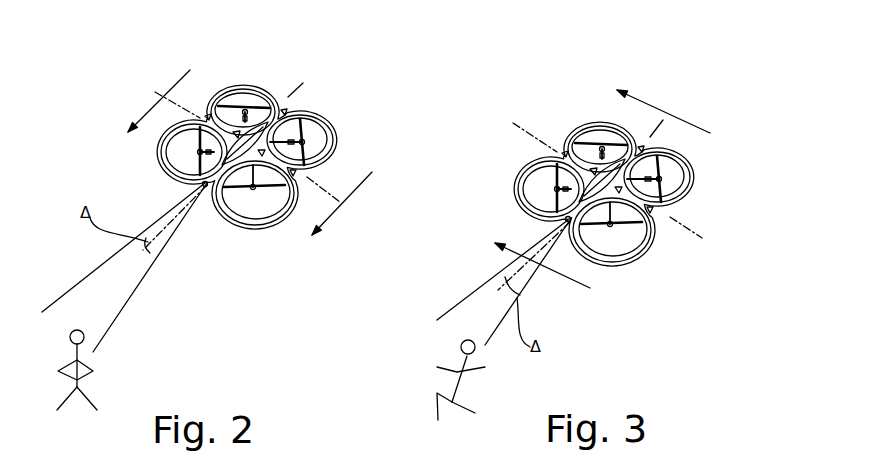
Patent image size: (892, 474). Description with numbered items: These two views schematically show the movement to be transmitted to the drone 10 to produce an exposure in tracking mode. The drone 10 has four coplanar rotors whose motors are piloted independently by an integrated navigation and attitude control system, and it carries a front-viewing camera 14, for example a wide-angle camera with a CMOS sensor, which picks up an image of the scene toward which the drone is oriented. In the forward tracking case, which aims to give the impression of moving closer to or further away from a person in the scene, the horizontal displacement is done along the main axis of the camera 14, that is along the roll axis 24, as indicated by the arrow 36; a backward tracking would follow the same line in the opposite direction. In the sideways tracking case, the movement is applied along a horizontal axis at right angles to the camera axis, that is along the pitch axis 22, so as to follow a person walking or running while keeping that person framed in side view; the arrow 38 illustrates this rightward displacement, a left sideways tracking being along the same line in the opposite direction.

In FIG. 2, the drone 10 is at (333, 133).
In FIG. 3, the drone 10 is at (693, 178).
In FIG. 2, the front-viewing camera 14 is at (205, 184).
In FIG. 3, the front-viewing camera 14 is at (560, 214).
In FIG. 2, the pitch axis 22 is at (323, 187).
In FIG. 3, the pitch axis 22 is at (677, 222).
In FIG. 2, the roll axis 24 is at (303, 83).
In FIG. 3, the roll axis 24 is at (648, 139).
In FIG. 2, the arrow 36 is at (173, 83).
In FIG. 3, the backward movement direction 38 is at (703, 128).